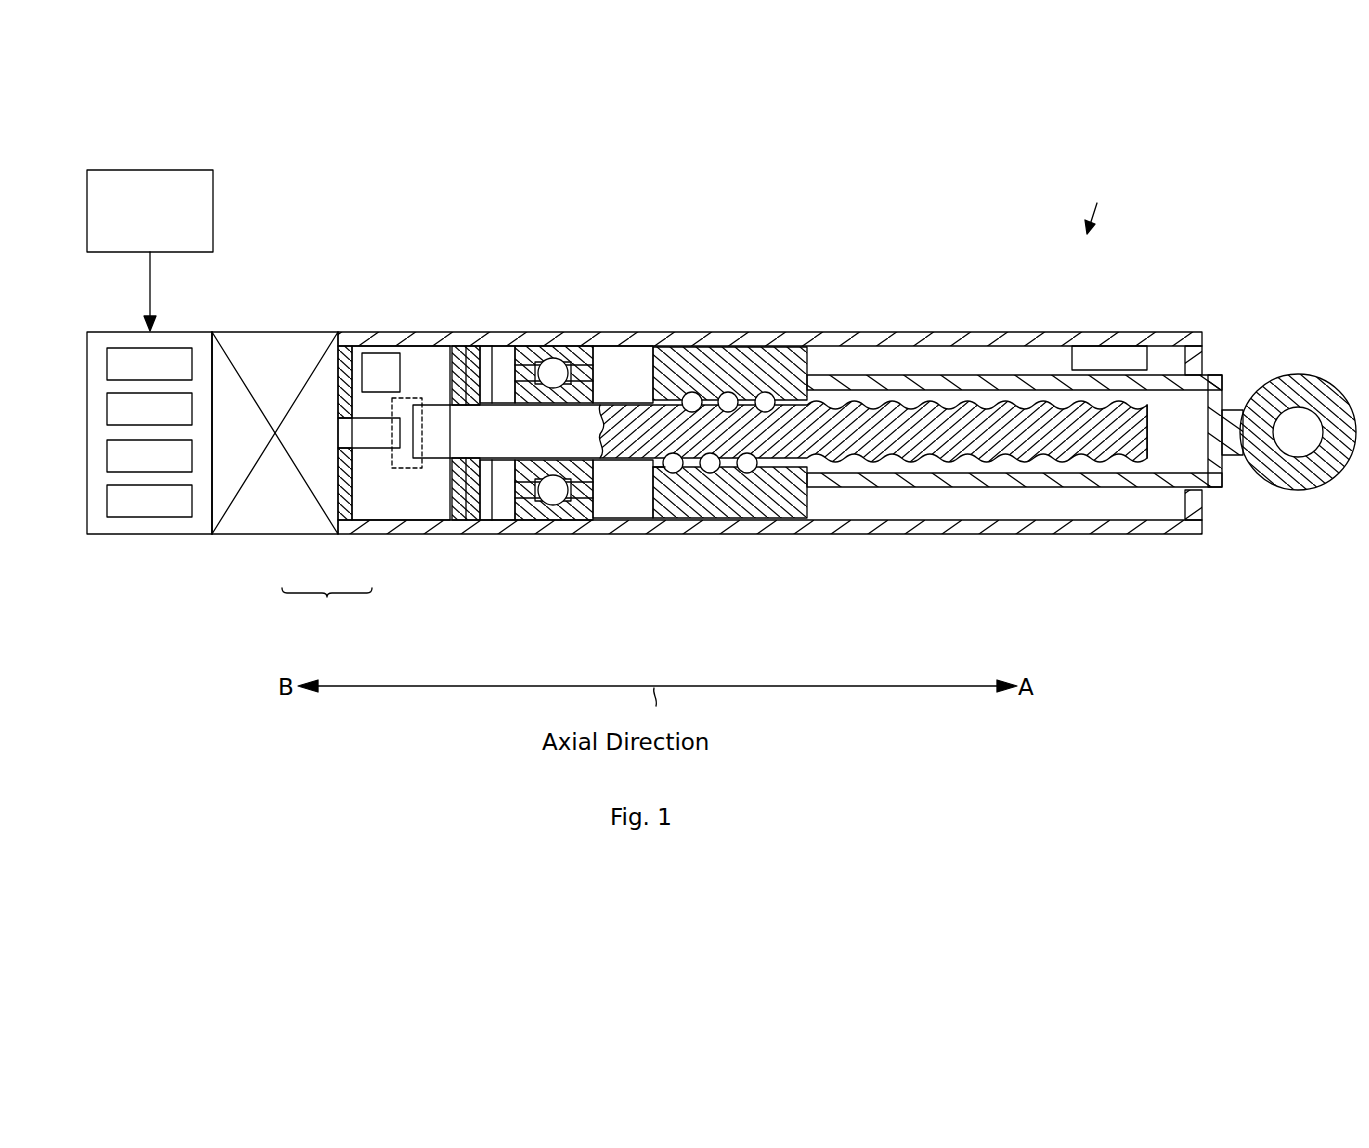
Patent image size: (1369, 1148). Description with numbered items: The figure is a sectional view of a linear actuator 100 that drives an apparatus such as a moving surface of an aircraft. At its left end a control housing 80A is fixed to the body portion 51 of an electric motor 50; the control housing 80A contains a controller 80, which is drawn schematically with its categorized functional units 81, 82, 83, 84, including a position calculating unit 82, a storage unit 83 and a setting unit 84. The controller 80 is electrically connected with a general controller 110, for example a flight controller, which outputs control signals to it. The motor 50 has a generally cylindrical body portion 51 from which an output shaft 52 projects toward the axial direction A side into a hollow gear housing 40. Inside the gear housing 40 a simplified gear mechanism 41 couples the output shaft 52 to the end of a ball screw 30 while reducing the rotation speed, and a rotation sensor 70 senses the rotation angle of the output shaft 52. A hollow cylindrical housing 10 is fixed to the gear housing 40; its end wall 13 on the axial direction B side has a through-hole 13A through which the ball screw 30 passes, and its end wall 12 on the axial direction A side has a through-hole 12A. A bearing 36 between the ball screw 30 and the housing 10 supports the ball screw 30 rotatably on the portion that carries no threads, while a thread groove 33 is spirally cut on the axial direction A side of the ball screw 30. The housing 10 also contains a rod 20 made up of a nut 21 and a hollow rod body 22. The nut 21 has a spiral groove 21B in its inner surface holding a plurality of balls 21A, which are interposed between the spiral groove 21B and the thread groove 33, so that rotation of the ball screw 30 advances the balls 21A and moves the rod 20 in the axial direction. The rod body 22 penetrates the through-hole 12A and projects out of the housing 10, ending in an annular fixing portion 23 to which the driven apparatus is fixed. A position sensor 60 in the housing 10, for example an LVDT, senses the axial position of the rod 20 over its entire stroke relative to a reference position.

The linear actuator 100 is at (1100, 205).
The general controller 110 is at (214, 188).
The housing 10 is at (898, 332).
The end wall 12 is at (1203, 352).
The through-hole 12A is at (1201, 492).
The end wall 13 is at (463, 346).
The through-hole 13A is at (495, 455).
The rod 20 is at (992, 375).
The nut 21 is at (705, 346).
The balls 21A is at (766, 392).
The spiral groove 21B is at (646, 470).
The rod body 22 is at (913, 487).
The fixing portion 23 is at (1321, 485).
The ball screw 30 is at (493, 346).
The thread groove 33 is at (1103, 460).
The bearing 36 is at (606, 346).
The gear housing 40 is at (428, 535).
The gear mechanism 41 is at (412, 396).
The electric motor 50 is at (327, 610).
The body portion 51 is at (306, 535).
The output shaft 52 is at (355, 535).
The position sensor 60 is at (1128, 346).
The rotation sensor 70 is at (379, 346).
The controller 80 is at (152, 535).
The control housing 80A is at (195, 535).
The first control section 81 is at (107, 365).
The position calculating unit 82 is at (107, 410).
The storage unit 83 is at (107, 456).
The setting unit 84 is at (107, 502).